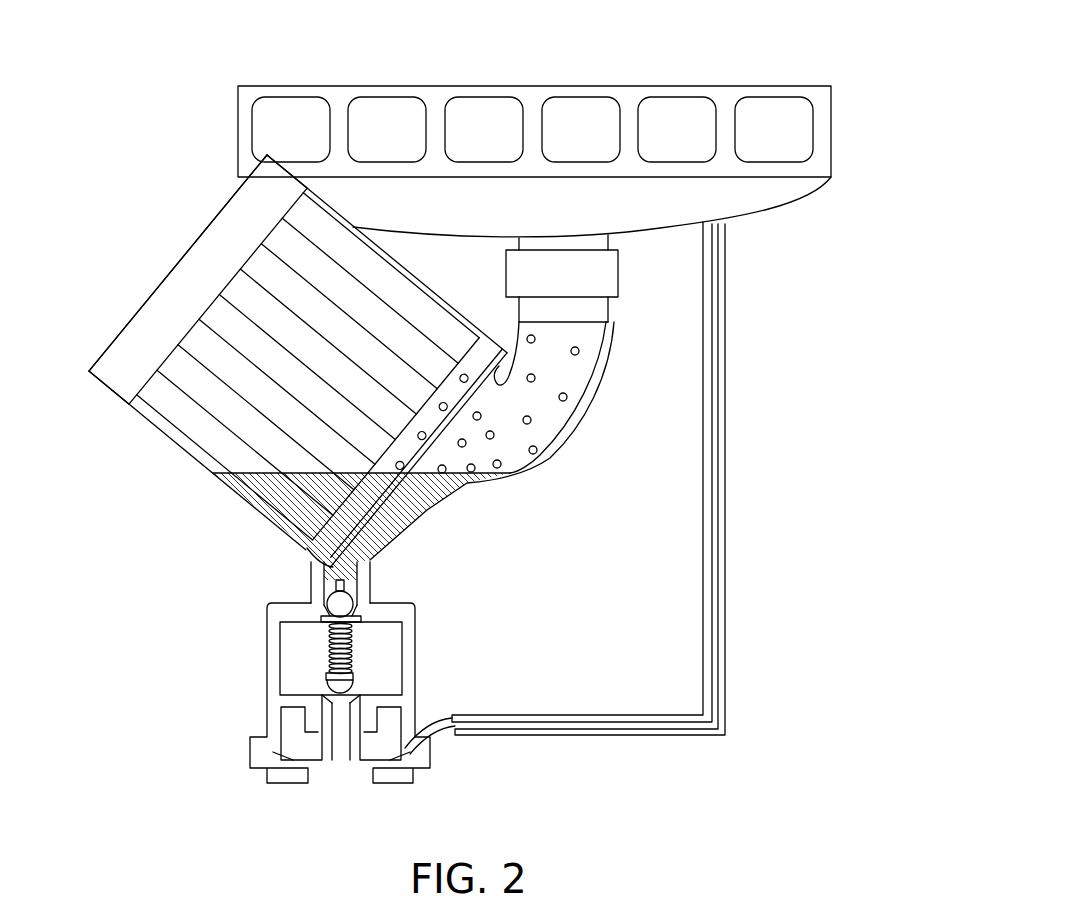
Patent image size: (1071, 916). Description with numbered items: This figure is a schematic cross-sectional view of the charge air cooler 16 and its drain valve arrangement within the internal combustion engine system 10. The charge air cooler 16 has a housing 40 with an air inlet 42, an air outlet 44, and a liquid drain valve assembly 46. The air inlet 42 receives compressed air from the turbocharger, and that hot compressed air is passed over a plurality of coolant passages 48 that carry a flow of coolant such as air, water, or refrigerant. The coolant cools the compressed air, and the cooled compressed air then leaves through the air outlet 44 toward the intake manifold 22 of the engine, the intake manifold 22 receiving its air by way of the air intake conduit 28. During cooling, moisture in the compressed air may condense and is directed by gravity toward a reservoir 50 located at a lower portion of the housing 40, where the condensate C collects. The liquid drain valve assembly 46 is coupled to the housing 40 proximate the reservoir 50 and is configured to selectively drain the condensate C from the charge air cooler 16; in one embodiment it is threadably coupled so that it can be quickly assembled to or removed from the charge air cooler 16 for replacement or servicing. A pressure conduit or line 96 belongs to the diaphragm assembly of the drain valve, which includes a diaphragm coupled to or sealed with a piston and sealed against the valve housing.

The internal combustion engine system 10 is at (862, 66).
The intake manifold 22 is at (832, 148).
The charge air cooler 16 is at (103, 408).
The air inlet 42 is at (143, 290).
The housing 40 is at (108, 347).
The coolant passages 48 is at (420, 300).
The reservoir 50 is at (283, 533).
The air intake conduit 28 is at (578, 408).
The condensate C is at (397, 522).
The air outlet 44 is at (463, 510).
The liquid drain valve assembly 46 is at (225, 690).
The pressure conduit or line 96 is at (725, 463).